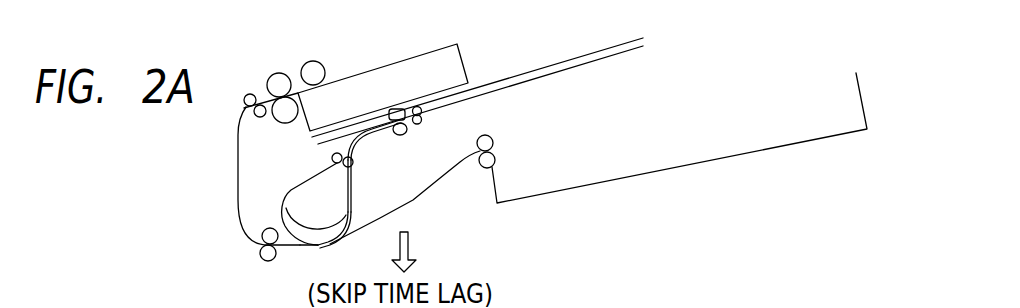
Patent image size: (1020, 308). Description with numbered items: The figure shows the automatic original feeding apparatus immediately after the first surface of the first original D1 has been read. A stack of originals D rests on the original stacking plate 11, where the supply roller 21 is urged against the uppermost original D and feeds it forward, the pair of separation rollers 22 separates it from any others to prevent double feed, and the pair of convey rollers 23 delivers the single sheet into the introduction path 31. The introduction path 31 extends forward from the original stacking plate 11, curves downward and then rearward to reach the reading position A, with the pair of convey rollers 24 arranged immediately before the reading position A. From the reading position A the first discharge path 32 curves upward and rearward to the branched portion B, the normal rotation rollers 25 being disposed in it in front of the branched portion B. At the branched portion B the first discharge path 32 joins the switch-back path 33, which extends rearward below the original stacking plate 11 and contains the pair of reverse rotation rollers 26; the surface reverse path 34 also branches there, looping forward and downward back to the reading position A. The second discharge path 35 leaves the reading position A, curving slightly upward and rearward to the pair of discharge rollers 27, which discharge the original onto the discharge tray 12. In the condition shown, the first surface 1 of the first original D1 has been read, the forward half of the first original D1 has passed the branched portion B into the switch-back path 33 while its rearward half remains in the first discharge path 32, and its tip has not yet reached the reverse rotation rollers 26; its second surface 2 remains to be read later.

The original D is at (410, 66).
The original stacking plate 11 is at (493, 80).
The switch-back path 33 is at (493, 93).
The convey rollers 23 is at (250, 94).
The separation rollers 22 is at (278, 78).
The supply roller 21 is at (316, 66).
The introduction path 31 is at (237, 167).
The reading position A is at (303, 247).
The convey rollers 24 is at (259, 247).
The branched portion B is at (358, 143).
The first original D1 is at (351, 190).
The normal rotation rollers 25 is at (332, 157).
The first discharge path 32 is at (284, 206).
The surface reverse path 34 is at (298, 185).
The second discharge path 35 is at (440, 180).
The discharge rollers 27 is at (493, 140).
The reverse rotation rollers 26 is at (421, 125).
The discharge tray 12 is at (610, 180).
The second surface of the first original 2 is at (397, 115).
The first surface of the first original 1 is at (400, 129).